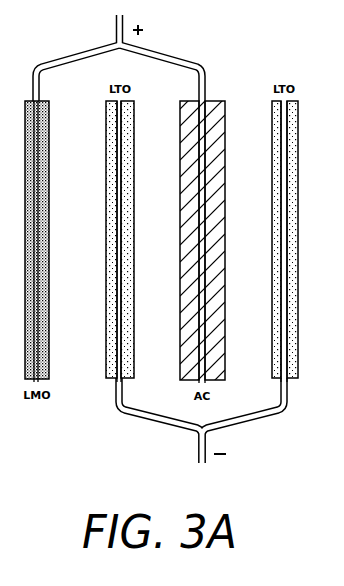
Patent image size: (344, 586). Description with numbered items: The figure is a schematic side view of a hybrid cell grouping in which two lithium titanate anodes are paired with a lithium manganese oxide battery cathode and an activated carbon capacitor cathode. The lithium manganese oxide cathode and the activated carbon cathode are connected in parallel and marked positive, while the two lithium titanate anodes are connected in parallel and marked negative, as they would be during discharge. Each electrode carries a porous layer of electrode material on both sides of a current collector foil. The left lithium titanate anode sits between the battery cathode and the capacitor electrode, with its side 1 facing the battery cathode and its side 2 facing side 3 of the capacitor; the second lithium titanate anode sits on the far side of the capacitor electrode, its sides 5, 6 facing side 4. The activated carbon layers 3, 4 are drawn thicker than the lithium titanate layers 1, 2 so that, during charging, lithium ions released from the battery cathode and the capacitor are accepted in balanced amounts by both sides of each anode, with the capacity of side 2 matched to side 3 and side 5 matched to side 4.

The side of the left LTO anode 1 is at (106, 240).
The side of the left LTO anode 2 is at (132, 240).
The side of the AC capacitor cathode 3 is at (184, 240).
The side of the AC capacitor cathode 4 is at (220, 240).
The side of the right LTO anode 5 is at (272, 240).
The side of the right LTO anode 6 is at (298, 240).